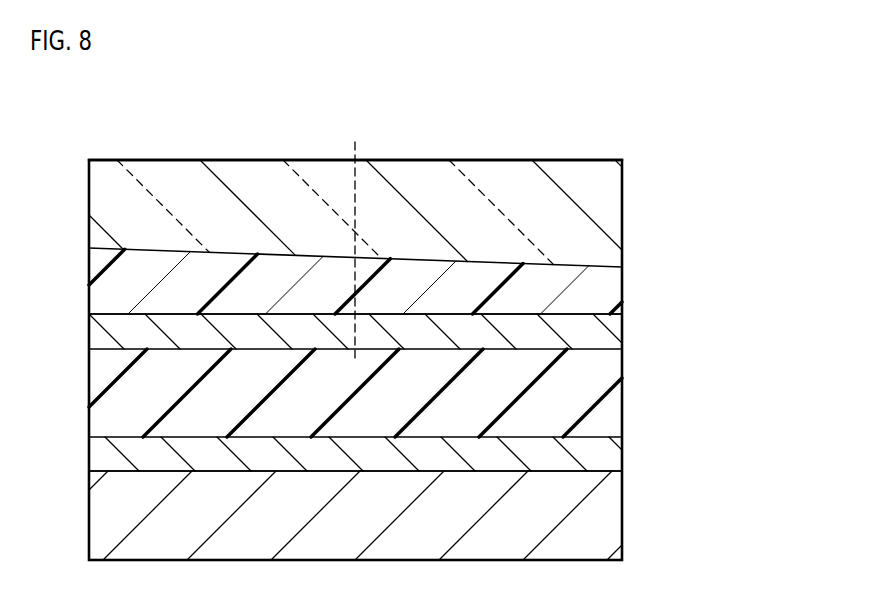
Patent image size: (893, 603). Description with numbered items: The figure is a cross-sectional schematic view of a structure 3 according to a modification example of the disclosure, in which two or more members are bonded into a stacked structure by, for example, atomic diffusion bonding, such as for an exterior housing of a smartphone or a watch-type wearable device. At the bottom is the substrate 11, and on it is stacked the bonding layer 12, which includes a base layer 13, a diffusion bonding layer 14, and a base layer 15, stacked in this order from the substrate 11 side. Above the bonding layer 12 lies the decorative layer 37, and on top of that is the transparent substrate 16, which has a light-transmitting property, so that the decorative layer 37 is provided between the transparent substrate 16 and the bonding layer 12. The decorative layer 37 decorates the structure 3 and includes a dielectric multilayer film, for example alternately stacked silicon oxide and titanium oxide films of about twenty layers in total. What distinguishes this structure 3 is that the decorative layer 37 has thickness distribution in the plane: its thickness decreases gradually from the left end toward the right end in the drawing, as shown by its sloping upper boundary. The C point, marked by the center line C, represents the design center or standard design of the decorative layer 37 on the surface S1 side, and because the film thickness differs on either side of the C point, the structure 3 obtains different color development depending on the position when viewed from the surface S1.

The structure 3 is at (682, 101).
The surface S1 is at (589, 158).
The transparent substrate 16 is at (612, 203).
The decorative layer 37 is at (612, 282).
The base layer 15 is at (612, 330).
The diffusion bonding layer 14 is at (612, 392).
The base layer 13 is at (612, 453).
The bonding layer 12 is at (686, 317).
The substrate 11 is at (612, 515).
The C point C is at (357, 238).